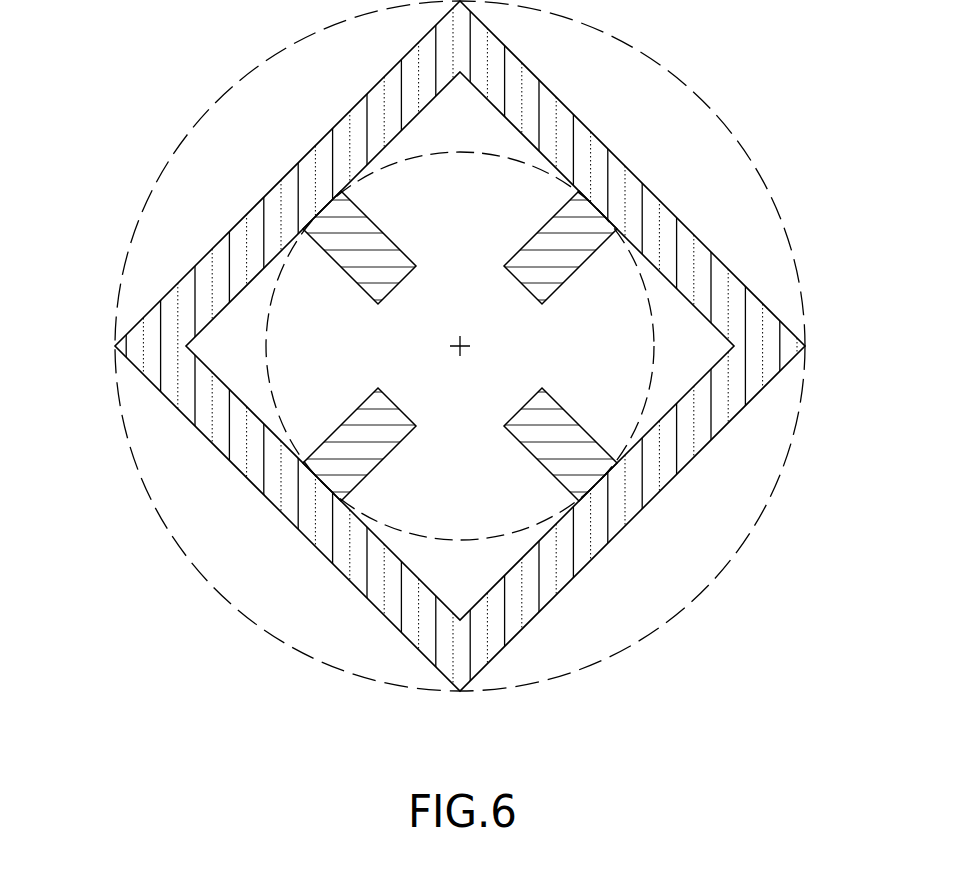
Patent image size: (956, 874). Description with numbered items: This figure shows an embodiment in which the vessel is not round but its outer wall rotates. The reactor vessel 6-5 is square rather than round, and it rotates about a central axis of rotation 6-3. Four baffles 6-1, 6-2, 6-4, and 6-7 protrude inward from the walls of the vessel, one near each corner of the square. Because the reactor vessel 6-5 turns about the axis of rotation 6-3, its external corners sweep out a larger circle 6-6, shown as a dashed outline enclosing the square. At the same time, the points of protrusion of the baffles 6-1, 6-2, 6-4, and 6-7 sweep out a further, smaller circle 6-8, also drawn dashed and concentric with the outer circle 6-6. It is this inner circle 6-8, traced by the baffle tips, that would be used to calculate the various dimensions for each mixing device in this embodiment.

The baffle 6-1 is at (585, 478).
The baffle 6-2 is at (335, 478).
The axis of rotation 6-3 is at (466, 341).
The baffle 6-4 is at (333, 213).
The reactor vessel 6-5 is at (720, 267).
The circle 6-6 is at (178, 147).
The baffle 6-7 is at (587, 213).
The circle 6-8 is at (268, 388).